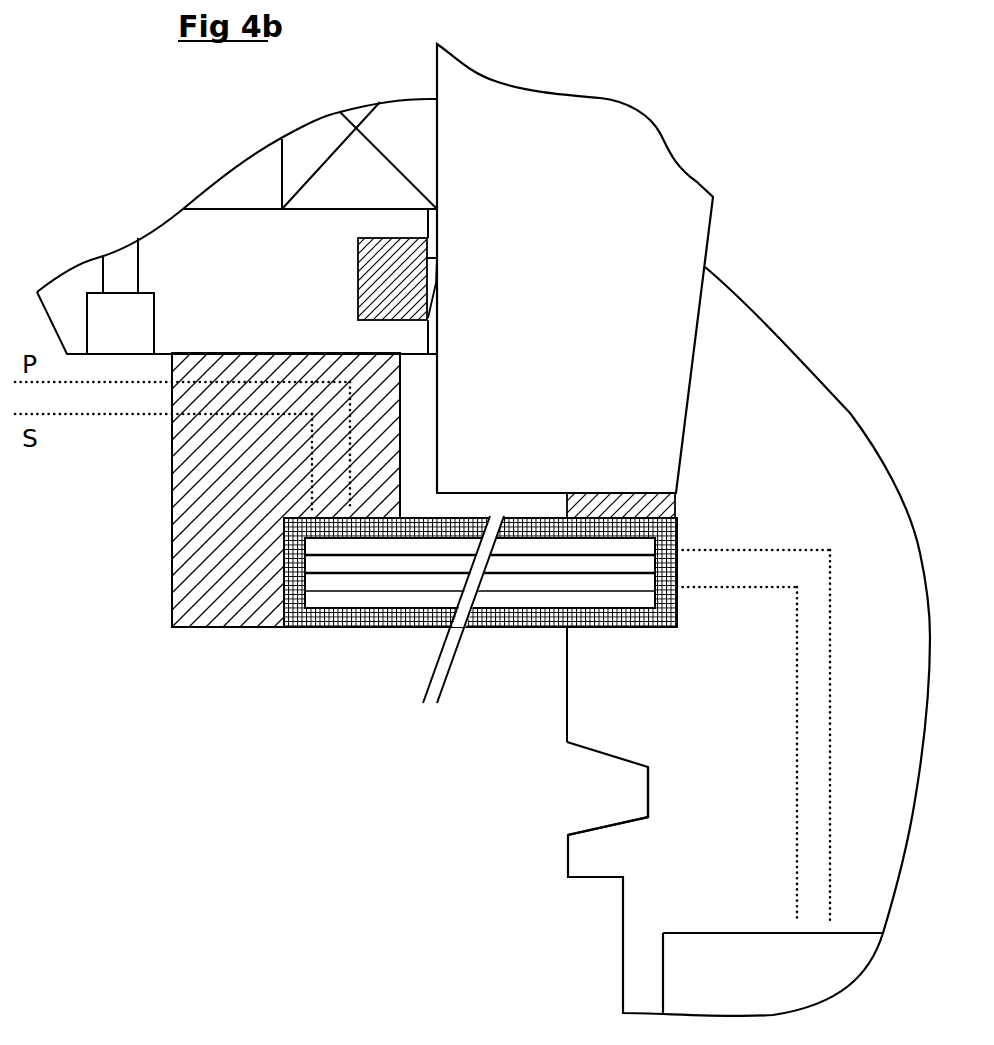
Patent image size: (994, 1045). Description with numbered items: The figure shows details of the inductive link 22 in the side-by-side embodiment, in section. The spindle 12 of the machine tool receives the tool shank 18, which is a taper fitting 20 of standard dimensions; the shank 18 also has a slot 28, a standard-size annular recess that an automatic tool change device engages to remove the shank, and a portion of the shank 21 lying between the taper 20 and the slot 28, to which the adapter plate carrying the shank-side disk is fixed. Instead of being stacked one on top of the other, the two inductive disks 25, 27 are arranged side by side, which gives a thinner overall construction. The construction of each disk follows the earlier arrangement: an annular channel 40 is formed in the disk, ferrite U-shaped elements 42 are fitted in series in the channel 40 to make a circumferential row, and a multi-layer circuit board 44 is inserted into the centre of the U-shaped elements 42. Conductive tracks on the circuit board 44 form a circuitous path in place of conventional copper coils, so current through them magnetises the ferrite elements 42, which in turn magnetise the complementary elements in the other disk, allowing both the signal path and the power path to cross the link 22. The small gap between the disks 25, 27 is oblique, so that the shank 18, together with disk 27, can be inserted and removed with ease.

The spindle 12 is at (562, 331).
The tool shank 18 is at (555, 930).
The taper fitting 20 is at (847, 545).
The portion of the shank 21 is at (585, 715).
The inductive link 22 is at (418, 727).
The disk 25 is at (340, 637).
The disk 27 is at (522, 635).
The slot 28 is at (610, 793).
The annular channel 40 is at (288, 627).
The ferrite U-shaped element 42 is at (328, 627).
The multi-layer circuit board 44 is at (388, 577).